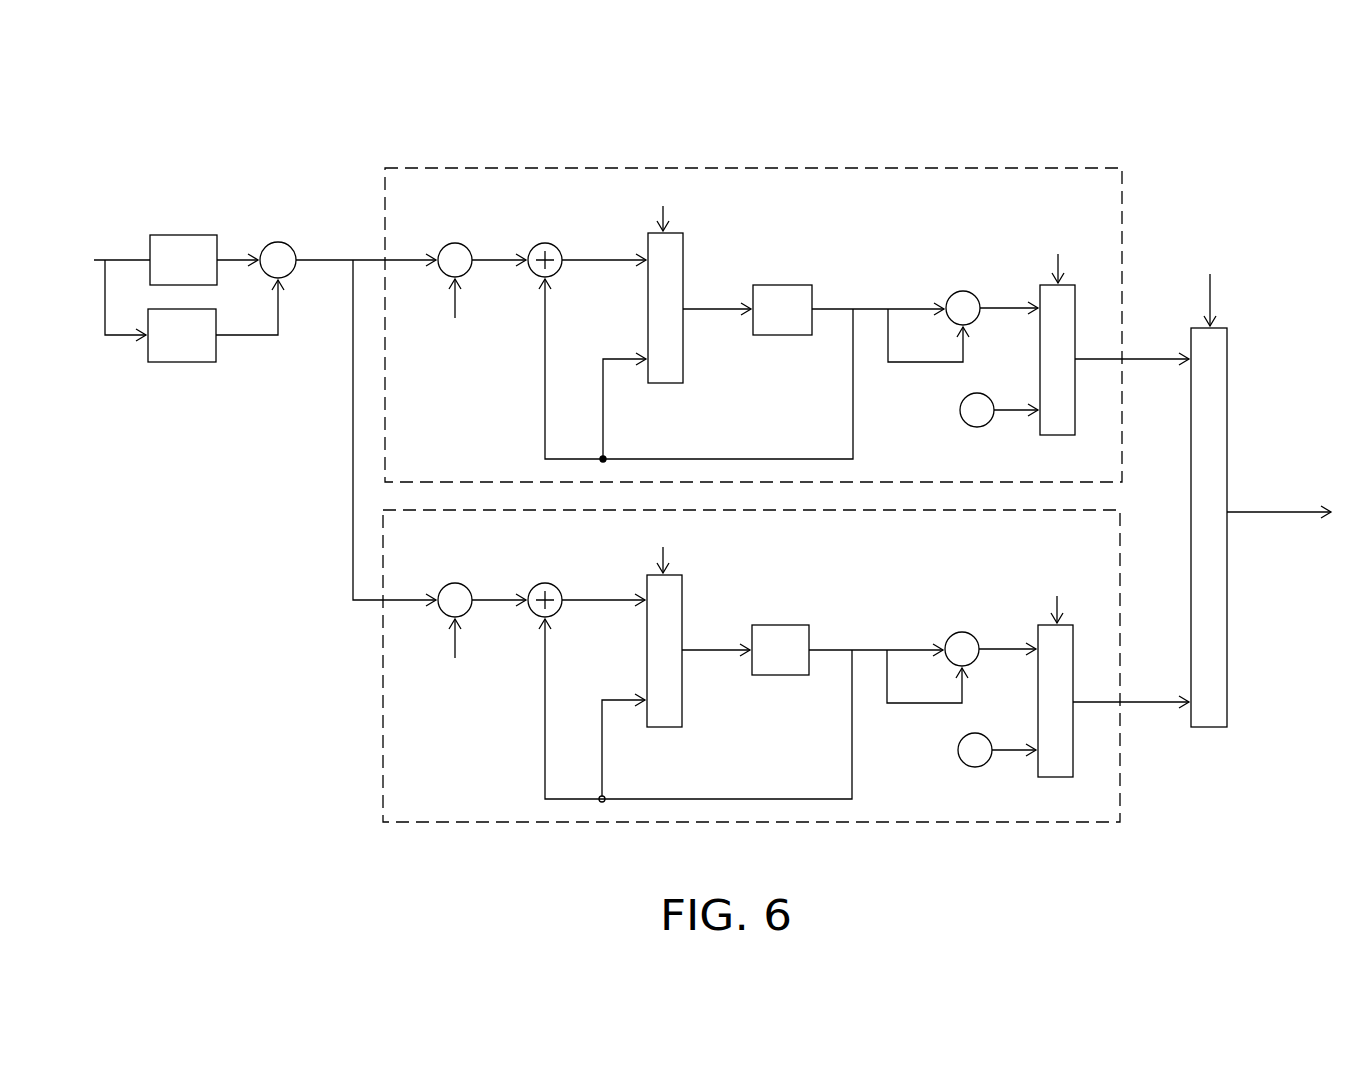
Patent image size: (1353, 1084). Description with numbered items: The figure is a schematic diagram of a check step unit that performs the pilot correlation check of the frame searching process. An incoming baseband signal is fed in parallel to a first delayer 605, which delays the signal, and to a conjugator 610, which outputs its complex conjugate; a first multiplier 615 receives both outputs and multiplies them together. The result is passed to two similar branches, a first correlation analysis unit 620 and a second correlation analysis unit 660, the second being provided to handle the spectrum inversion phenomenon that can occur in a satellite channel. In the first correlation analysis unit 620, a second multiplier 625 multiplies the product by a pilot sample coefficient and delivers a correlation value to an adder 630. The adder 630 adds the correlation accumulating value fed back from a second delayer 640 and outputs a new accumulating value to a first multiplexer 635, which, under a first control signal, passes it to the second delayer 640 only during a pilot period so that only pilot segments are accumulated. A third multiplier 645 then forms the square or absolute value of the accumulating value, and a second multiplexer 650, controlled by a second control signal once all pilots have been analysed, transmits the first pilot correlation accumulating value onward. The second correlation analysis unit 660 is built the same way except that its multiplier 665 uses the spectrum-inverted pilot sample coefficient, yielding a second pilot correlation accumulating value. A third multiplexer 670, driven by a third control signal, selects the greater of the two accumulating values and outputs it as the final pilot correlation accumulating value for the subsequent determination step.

The first delayer 605 is at (183, 235).
The conjugator 610 is at (183, 362).
The first multiplier 615 is at (280, 242).
The first correlation analysis unit 620 is at (550, 166).
The second multiplier 625 is at (455, 243).
The adder 630 is at (545, 243).
The first multiplexer 635 is at (683, 260).
The second delayer 640 is at (784, 285).
The third multiplier 645 is at (966, 291).
The second multiplexer 650 is at (1075, 312).
The second correlation analysis unit 660 is at (553, 822).
The multiplier 665 is at (455, 583).
The third multiplexer 670 is at (1227, 700).